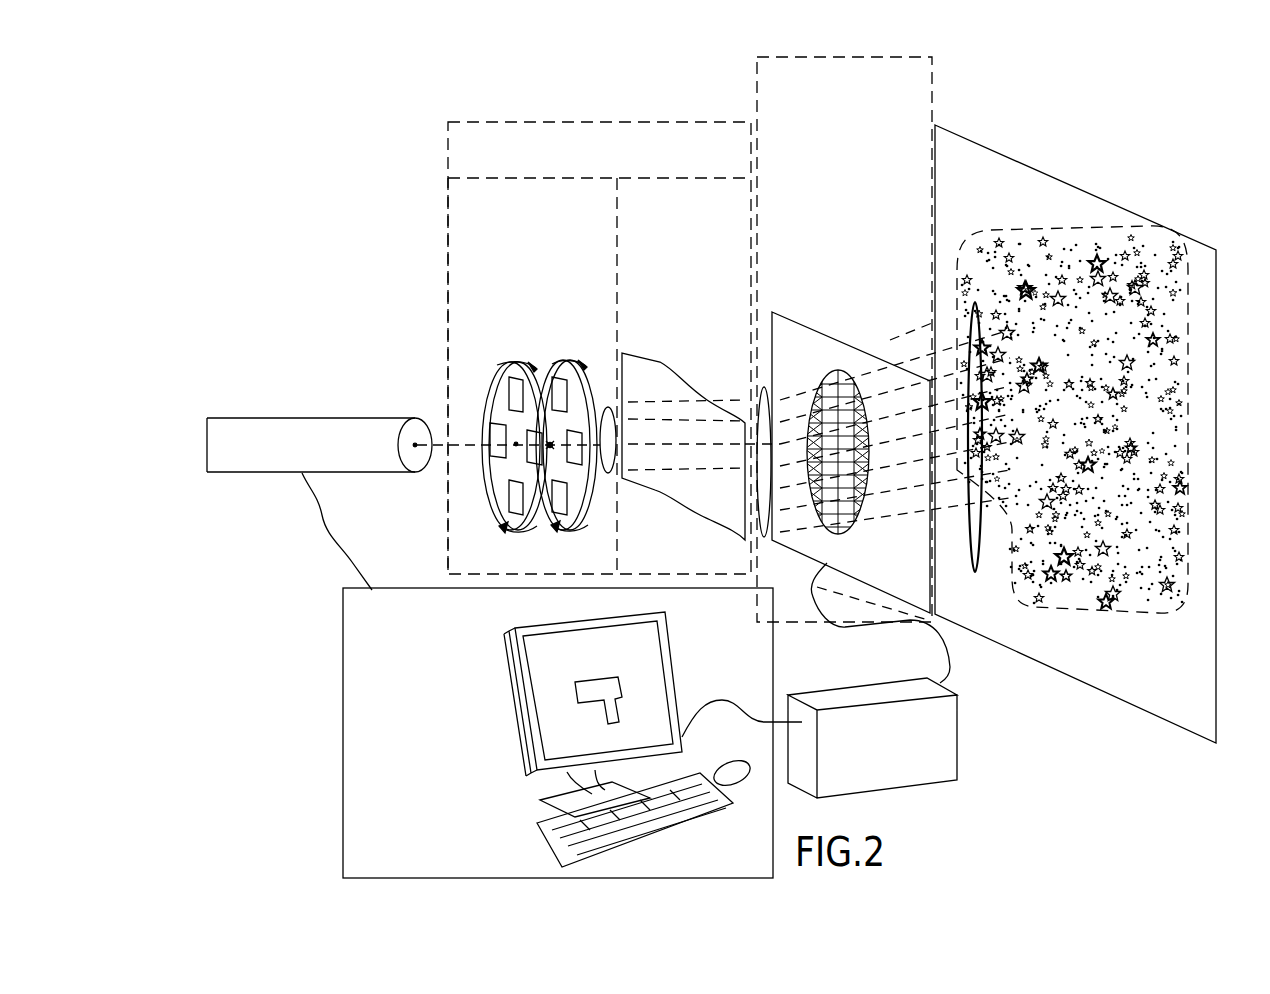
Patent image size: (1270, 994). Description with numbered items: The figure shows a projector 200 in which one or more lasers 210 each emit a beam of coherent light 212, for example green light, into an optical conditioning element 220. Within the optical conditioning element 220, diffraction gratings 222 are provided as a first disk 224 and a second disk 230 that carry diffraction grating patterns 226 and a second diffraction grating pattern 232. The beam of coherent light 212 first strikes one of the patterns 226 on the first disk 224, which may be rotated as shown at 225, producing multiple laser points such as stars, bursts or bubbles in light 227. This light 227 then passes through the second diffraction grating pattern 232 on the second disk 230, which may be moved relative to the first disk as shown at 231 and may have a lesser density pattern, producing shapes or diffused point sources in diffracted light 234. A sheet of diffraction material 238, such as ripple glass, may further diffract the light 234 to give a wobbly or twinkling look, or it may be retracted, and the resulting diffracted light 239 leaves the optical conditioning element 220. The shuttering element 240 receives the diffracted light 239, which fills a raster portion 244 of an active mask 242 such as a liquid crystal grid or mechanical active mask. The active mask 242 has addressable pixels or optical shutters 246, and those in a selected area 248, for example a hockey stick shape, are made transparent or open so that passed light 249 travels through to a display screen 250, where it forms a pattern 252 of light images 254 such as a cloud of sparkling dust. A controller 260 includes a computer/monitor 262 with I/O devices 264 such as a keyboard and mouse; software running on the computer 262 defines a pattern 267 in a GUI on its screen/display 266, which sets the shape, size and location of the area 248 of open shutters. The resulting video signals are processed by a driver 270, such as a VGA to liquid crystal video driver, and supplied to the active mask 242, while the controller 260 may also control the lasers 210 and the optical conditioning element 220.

The projector 200 is at (315, 337).
The laser 210 is at (223, 473).
The beam of coherent light 212 is at (443, 441).
The optical conditioning element 220 is at (580, 118).
The diffraction gratings 222 is at (446, 272).
The first disk 224 is at (517, 527).
The rotation of first disk 225 is at (516, 372).
The diffraction grating patterns 226 is at (497, 460).
The light 227 is at (480, 420).
The second disk 230 is at (568, 527).
The movement of second disk 231 is at (587, 378).
The second diffraction grating pattern 232 is at (551, 450).
The diffracted light 234 is at (610, 473).
The diffraction material 238 is at (676, 358).
The diffracted light 239 is at (765, 537).
The shuttering element 240 is at (752, 58).
The active mask 242 is at (808, 331).
The raster portion 244 is at (862, 502).
The addressable pixels/optical shutters 246 is at (826, 505).
The pattern area 248 is at (853, 476).
The passed light 249 is at (975, 572).
The display screen 250 is at (1097, 660).
The pattern 252 is at (1140, 622).
The light images 254 is at (1140, 545).
The controller 260 is at (342, 784).
The computer/monitor 262 is at (523, 762).
The I/O devices 264 is at (538, 832).
The screen/display 266 is at (512, 628).
The pattern 267 is at (617, 690).
The driver 270 is at (957, 760).